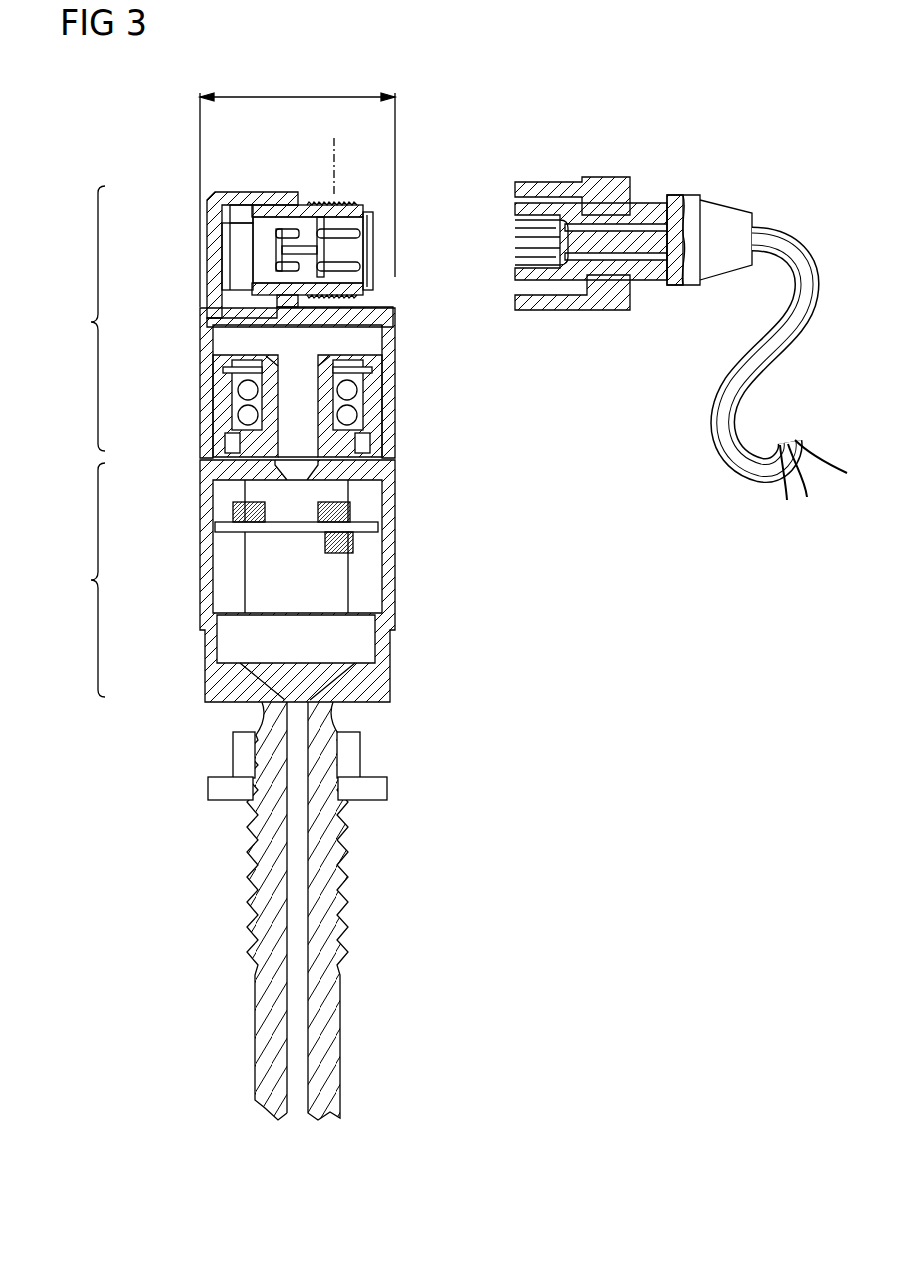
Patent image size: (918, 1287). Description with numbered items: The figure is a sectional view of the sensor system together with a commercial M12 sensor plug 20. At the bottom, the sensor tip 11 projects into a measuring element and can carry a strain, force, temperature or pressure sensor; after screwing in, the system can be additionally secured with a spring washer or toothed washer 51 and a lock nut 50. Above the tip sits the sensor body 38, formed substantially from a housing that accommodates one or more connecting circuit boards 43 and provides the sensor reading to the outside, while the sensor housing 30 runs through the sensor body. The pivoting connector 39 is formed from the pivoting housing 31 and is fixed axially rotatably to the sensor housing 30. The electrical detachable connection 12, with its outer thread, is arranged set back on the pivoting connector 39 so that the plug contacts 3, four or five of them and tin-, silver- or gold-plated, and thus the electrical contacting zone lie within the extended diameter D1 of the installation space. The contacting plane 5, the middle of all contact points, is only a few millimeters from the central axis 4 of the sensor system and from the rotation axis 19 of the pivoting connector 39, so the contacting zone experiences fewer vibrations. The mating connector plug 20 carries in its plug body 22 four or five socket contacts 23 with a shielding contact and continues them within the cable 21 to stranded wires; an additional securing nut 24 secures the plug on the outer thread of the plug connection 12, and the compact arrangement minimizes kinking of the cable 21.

The extended diameter of the installation space D1 is at (318, 97).
The plug contacts 3 is at (357, 264).
The central axis 4 is at (284, 562).
The contacting plane 5 is at (334, 140).
The sensor tip 11 is at (257, 851).
The electrical detachable connection 12 is at (357, 205).
The rotation axis 19 is at (284, 148).
The connector plug 20 is at (670, 132).
The cable 21 is at (740, 400).
The plug body 22 is at (647, 247).
The socket contacts 23 is at (535, 227).
The securing nut 24 is at (582, 300).
The sensor housing 30 is at (184, 590).
The pivoting housing 31 is at (184, 366).
The sensor body 38 is at (253, 581).
The pivoting connector 39 is at (243, 281).
The connecting circuit boards 43 is at (364, 512).
The lock nut 50 is at (374, 751).
The spring washer or toothed washer 51 is at (401, 790).